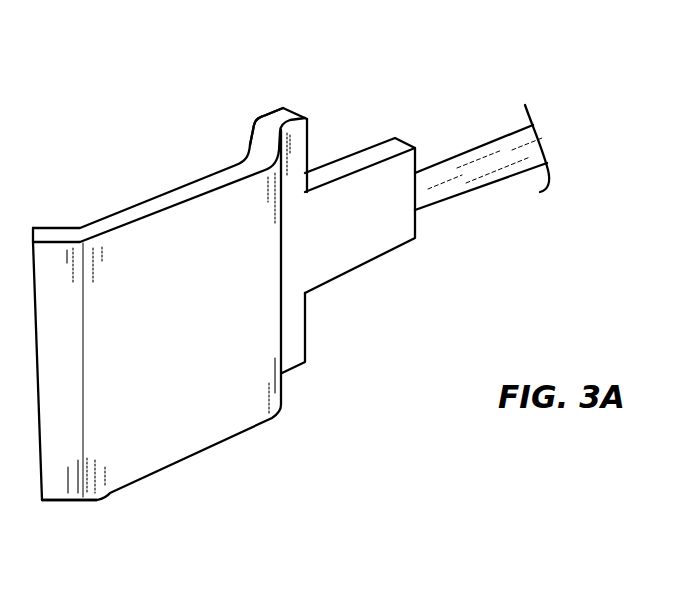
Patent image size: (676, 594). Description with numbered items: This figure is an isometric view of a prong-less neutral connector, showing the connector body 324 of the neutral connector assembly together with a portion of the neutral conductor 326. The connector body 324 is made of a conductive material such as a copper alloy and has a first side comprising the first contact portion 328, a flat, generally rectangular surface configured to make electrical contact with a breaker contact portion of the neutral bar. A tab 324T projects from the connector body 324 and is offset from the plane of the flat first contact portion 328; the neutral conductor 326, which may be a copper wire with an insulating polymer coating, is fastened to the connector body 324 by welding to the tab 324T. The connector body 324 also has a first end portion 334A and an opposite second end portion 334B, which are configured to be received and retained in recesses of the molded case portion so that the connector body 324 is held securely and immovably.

The connector body 324 is at (283, 412).
The tab 324T is at (357, 267).
The neutral conductor 326 is at (483, 187).
The first contact portion 328 is at (174, 395).
The first end portion 334A is at (90, 505).
The second end portion 334B is at (393, 137).